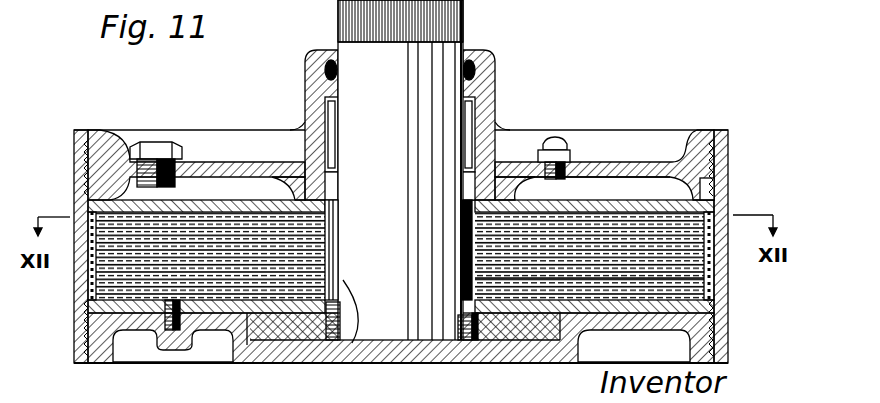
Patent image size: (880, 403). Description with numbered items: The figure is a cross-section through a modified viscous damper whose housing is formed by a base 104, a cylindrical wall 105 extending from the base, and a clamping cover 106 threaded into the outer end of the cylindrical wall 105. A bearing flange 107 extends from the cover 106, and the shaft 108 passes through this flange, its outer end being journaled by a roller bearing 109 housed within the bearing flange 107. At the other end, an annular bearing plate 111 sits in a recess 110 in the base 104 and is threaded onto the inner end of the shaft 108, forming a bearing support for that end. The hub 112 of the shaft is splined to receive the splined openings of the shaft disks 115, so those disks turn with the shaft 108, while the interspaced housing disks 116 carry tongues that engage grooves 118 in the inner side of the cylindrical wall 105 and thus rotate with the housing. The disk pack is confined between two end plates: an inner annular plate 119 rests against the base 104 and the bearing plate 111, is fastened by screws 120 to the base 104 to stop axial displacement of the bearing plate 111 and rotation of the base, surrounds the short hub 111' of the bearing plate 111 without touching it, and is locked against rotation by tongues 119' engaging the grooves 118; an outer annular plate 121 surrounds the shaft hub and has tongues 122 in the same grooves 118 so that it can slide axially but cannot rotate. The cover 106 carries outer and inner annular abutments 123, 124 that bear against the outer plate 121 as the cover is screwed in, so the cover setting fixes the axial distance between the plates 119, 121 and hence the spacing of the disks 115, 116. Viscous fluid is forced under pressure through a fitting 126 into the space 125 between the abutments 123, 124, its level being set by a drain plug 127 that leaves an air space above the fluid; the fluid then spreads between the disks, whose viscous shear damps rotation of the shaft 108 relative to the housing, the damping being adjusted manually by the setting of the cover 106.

The base 104 is at (536, 366).
The cylindrical wall 105 is at (729, 327).
The cover 106 is at (645, 167).
The bearing flange 107 is at (497, 78).
The shaft 108 is at (466, 20).
The roller bearing 109 is at (478, 118).
The recess 110 is at (246, 352).
The annular bearing plate 111 is at (483, 293).
The short hub 111' is at (325, 292).
The hub 112 is at (350, 362).
The shaft disks 115 is at (712, 305).
The housing disks 116 is at (712, 280).
The grooves 118 is at (712, 258).
The annular plate 119 is at (634, 346).
The tongues 119' is at (109, 313).
The screws 120 is at (150, 345).
The annular outer plate 121 is at (712, 205).
The tongues 122 is at (75, 197).
The outer annular abutment 123 is at (712, 183).
The inner annular abutment 124 is at (505, 195).
The space 125 is at (600, 182).
The fitting 126 is at (548, 143).
The drain plug 127 is at (160, 153).